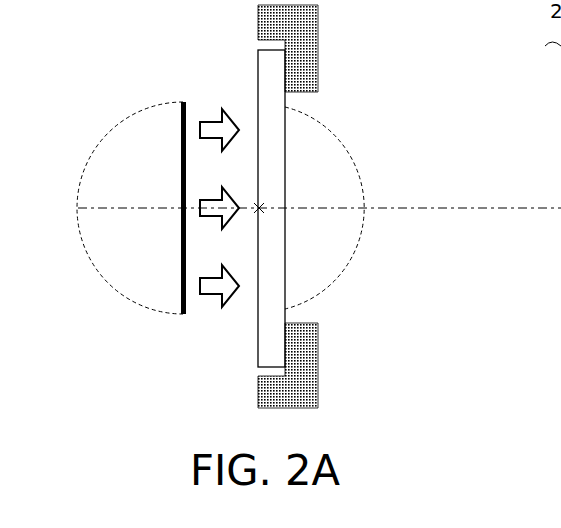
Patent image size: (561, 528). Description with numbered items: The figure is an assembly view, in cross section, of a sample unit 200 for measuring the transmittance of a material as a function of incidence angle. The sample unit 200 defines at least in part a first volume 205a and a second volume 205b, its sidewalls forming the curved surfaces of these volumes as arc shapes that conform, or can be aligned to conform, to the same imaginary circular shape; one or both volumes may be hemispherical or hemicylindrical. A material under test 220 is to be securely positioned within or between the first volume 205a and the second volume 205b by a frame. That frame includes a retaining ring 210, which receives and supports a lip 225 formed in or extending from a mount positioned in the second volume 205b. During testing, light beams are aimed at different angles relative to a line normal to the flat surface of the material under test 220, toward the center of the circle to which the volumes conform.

The sample unit 200 is at (98, 65).
The first volume 205a is at (172, 178).
The second volume 205b is at (350, 178).
The retaining ring 210 is at (308, 34).
The material under test 220 is at (176, 282).
The lip 225 is at (253, 338).